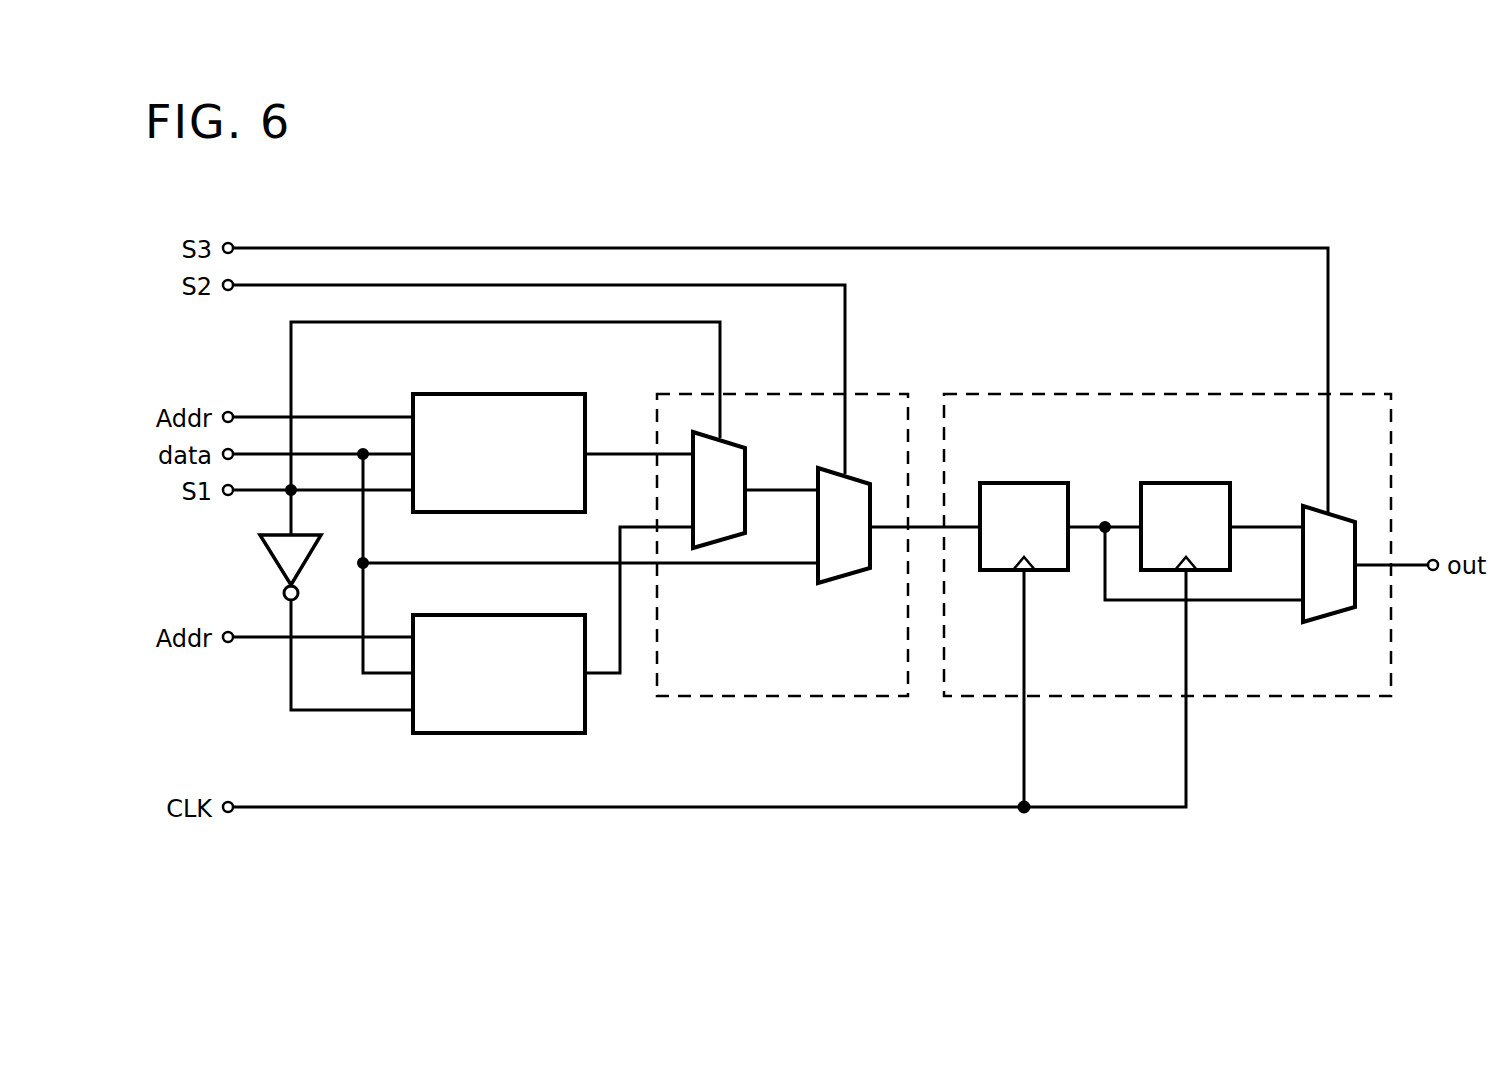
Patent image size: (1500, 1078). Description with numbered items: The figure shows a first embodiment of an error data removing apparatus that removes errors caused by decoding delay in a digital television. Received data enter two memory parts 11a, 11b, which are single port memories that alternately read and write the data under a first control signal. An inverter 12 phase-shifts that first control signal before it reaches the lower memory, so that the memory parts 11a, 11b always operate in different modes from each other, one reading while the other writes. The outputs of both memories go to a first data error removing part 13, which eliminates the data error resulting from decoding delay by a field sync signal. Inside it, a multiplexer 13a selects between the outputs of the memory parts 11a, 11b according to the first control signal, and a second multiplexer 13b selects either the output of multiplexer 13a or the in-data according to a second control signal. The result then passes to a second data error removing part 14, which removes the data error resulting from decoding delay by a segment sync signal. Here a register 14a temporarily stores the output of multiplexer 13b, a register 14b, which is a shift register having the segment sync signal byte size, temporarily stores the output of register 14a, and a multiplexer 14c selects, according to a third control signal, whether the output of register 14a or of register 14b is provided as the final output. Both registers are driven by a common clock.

The memory part 11a is at (500, 393).
The memory part 11b is at (500, 735).
The inverter 12 is at (271, 565).
The first data error removing part 13 is at (780, 393).
The multiplexer 13a is at (722, 550).
The multiplexer 13b is at (846, 584).
The second data error removing part 14 is at (1167, 393).
The register 14a is at (1026, 483).
The register 14b is at (1188, 483).
The multiplexer 14c is at (1331, 618).